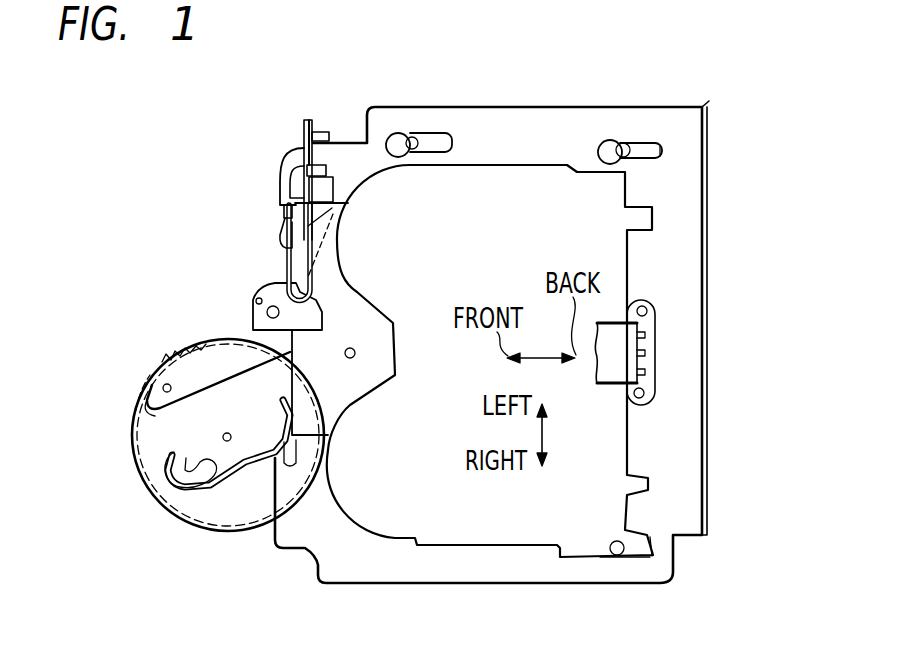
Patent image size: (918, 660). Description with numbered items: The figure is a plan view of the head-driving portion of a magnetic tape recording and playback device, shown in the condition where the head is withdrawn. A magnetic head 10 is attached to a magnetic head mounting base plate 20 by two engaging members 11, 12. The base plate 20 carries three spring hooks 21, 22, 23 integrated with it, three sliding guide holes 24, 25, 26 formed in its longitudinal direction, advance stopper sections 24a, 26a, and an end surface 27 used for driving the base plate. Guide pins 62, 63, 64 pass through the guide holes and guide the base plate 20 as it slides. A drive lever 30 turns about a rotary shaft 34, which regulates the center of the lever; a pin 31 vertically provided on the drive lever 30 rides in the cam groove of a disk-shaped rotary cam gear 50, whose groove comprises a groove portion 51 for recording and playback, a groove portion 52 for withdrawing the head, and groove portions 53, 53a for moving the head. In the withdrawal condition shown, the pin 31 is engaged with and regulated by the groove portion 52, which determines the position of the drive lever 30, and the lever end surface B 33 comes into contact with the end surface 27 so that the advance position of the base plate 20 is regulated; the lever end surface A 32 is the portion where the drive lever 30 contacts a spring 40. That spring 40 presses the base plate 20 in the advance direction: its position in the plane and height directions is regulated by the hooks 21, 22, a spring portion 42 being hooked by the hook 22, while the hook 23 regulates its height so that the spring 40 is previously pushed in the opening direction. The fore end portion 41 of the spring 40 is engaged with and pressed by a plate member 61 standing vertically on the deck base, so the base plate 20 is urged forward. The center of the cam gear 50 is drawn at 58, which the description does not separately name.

The magnetic head 10 is at (622, 343).
The engaging member 11 is at (646, 302).
The engaging member 12 is at (646, 396).
The magnetic head mounting base plate 20 is at (704, 106).
The spring hook 21 is at (352, 292).
The spring hook 22 is at (280, 238).
The spring hook 23 is at (322, 164).
The sliding guide hole 24 is at (644, 142).
The advance stopper section 24a is at (663, 148).
The sliding guide hole 25 is at (443, 134).
The sliding guide hole 26 is at (637, 558).
The advance stopper section 26a is at (655, 556).
The end surface 27 is at (334, 195).
The drive lever 30 is at (262, 316).
The pin 31 is at (157, 380).
The lever end surface A 32 is at (289, 185).
The lever end surface B 33 is at (281, 163).
The rotary shaft 34 is at (258, 300).
The spring 40 is at (312, 268).
The fore end portion of the spring 41 is at (304, 124).
The spring portion 42 is at (284, 210).
The disk-shaped rotary cam gear 50 is at (150, 463).
The groove portion 51 is at (222, 488).
The groove portion 52 is at (133, 393).
The groove portion 53 is at (283, 450).
The groove portion 53a is at (228, 494).
The shaft 58 is at (222, 437).
The plate member 61 is at (320, 131).
The guide pin 62 is at (412, 138).
The guide pin 63 is at (620, 146).
The guide pin 64 is at (617, 556).